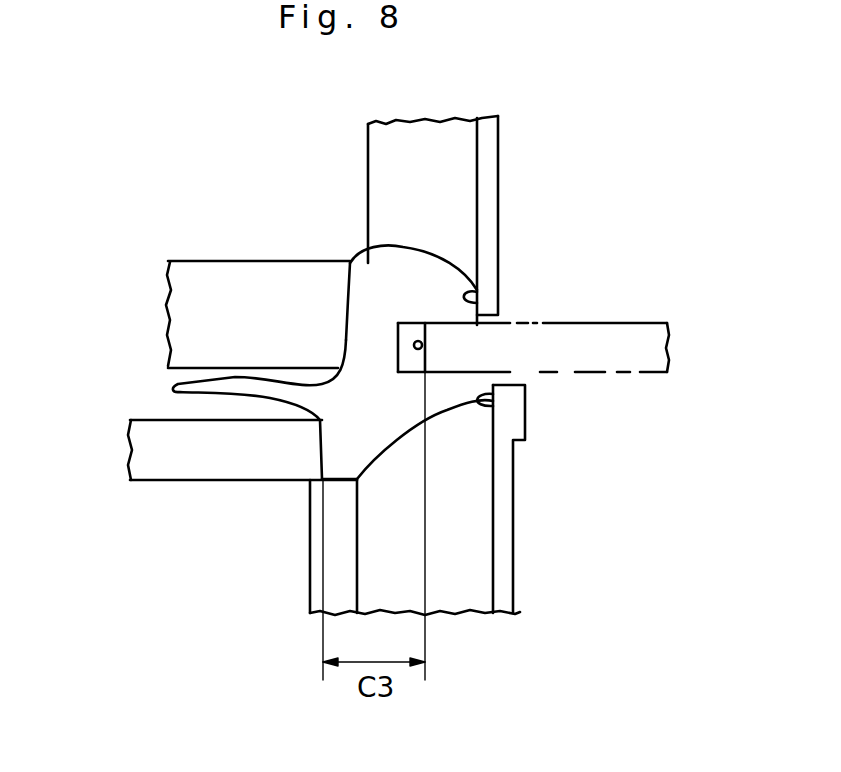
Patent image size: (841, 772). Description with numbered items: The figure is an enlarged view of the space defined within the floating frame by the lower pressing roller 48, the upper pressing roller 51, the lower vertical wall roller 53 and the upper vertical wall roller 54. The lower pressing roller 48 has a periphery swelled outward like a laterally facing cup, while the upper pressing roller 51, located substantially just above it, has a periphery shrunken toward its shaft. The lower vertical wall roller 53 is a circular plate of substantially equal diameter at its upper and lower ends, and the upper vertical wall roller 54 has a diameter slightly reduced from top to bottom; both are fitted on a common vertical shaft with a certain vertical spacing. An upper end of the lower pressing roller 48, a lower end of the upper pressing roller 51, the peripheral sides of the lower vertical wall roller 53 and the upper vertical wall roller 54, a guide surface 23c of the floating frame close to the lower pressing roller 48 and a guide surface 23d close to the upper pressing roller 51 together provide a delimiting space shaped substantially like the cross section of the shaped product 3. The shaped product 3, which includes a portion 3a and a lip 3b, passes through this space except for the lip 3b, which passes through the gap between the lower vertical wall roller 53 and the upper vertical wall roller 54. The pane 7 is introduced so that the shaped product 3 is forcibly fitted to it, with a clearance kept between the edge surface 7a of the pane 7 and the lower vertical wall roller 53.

The shaped product 3 is at (316, 388).
The seal body portion 3a is at (392, 348).
The lip 3b is at (188, 390).
The pane 7 is at (640, 340).
The edge surface 7a is at (423, 341).
The guide surface 23c is at (468, 408).
The guide surface 23d is at (480, 302).
The lower pressing roller 48 is at (383, 578).
The upper pressing roller 51 is at (388, 145).
The lower vertical wall roller 53 is at (164, 458).
The upper vertical wall roller 54 is at (197, 297).